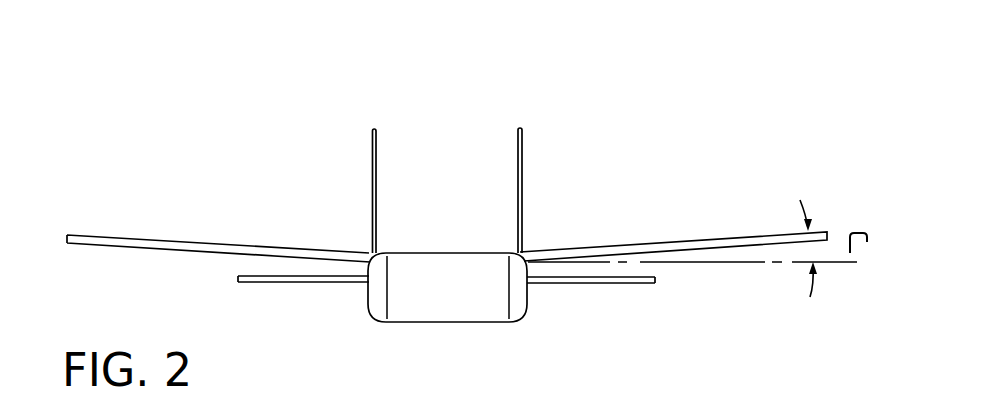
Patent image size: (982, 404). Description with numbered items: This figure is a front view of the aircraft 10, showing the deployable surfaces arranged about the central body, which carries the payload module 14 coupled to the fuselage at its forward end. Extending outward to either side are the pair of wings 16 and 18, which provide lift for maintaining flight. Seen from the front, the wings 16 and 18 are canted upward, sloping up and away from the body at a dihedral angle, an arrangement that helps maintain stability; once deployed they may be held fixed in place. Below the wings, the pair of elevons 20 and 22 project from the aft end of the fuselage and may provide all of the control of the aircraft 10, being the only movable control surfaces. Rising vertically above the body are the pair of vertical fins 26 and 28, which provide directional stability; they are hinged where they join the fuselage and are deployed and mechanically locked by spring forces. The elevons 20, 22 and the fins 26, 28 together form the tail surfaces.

The aircraft 10 is at (211, 168).
The payload module 14 is at (445, 322).
The wing 16 is at (142, 240).
The wing 18 is at (692, 241).
The elevon 20 is at (277, 282).
The elevon 22 is at (602, 283).
The vertical fin 26 is at (372, 148).
The vertical fin 28 is at (523, 153).